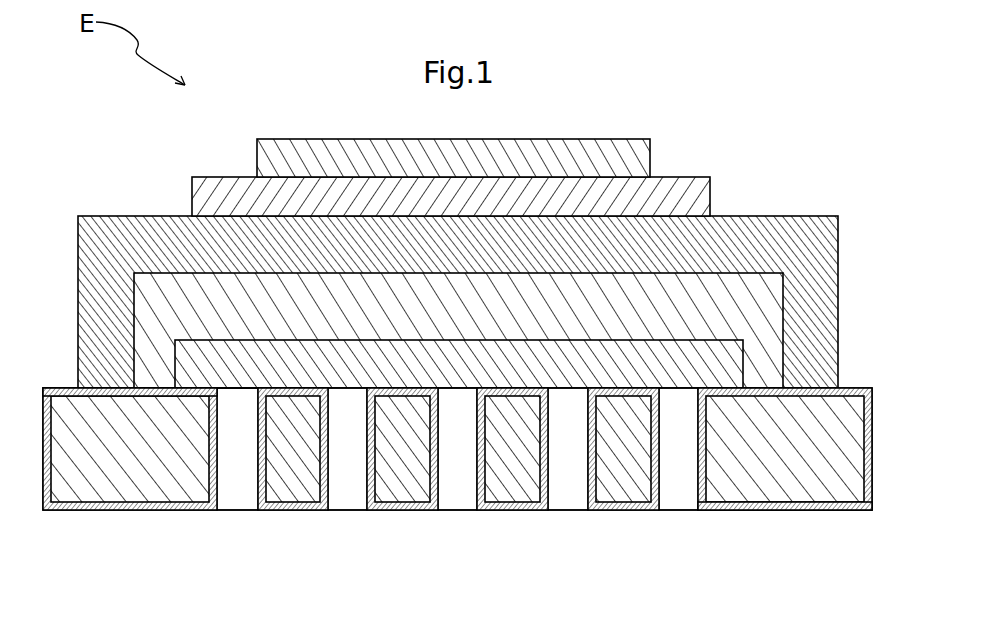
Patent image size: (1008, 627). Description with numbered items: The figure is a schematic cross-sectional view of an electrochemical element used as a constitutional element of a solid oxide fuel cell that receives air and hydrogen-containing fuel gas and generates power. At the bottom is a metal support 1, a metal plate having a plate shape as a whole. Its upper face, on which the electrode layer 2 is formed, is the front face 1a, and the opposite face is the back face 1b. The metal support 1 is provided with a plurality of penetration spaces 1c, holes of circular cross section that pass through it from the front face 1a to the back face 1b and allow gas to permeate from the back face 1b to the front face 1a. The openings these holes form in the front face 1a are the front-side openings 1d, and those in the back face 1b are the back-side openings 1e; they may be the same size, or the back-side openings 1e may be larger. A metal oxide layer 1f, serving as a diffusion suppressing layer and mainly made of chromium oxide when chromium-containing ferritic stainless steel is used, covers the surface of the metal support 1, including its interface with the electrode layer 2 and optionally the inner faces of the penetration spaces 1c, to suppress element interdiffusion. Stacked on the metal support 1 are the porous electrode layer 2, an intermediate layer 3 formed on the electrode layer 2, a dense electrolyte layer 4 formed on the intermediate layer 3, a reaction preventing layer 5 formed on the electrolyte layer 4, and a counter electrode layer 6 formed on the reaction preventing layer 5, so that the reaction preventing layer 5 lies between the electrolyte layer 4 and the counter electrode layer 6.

The metal support 1 is at (778, 490).
The front face 1a is at (97, 384).
The back face 1b is at (130, 512).
The penetration spaces 1c is at (258, 490).
The front-side openings 1d is at (234, 387).
The back-side openings 1e is at (346, 511).
The metal oxide layer 1f is at (725, 513).
The electrode layer 2 is at (733, 357).
The intermediate layer 3 is at (757, 305).
The electrolyte layer 4 is at (738, 230).
The reaction preventing layer 5 is at (198, 196).
The counter electrode layer 6 is at (275, 160).